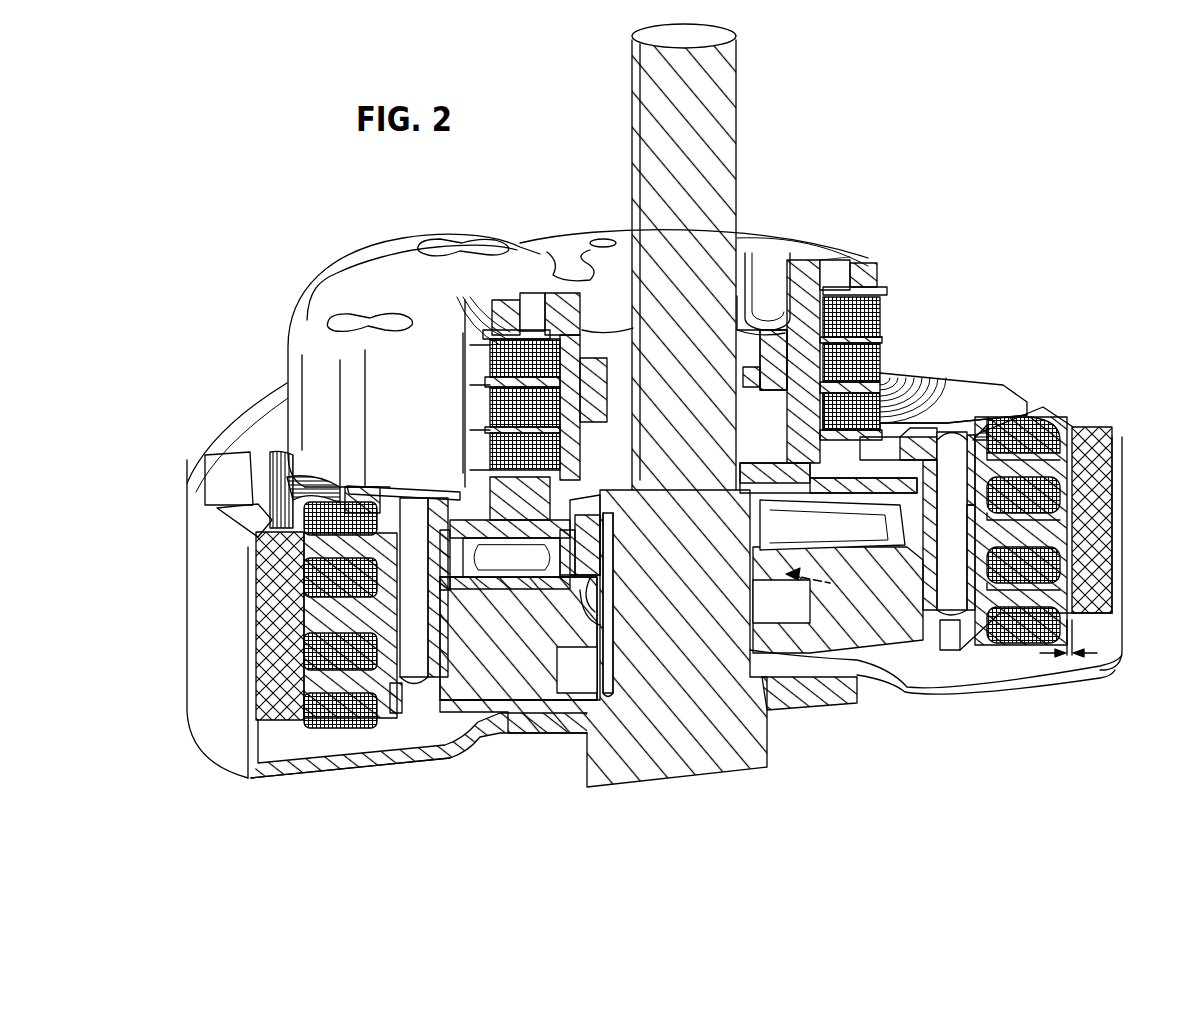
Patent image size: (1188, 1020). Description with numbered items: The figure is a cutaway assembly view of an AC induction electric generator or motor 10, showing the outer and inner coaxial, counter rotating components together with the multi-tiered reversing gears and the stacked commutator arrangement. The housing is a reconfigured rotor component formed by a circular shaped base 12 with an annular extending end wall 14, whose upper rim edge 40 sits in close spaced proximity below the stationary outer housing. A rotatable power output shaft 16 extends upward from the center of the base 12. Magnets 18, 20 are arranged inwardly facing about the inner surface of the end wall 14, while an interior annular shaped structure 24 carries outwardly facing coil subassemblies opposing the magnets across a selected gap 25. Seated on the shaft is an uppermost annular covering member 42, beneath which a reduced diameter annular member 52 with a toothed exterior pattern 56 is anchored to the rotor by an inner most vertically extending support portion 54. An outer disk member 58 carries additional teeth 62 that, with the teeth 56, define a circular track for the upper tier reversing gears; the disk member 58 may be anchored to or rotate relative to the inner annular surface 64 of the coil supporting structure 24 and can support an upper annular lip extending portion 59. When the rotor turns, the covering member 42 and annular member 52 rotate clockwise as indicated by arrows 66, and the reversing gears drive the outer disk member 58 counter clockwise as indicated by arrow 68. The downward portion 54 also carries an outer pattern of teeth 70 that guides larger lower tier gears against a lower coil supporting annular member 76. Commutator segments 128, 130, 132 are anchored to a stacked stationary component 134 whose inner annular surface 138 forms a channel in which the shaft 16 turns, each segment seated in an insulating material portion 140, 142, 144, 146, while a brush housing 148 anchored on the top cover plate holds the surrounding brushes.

The AC induction electric generator or motor 10 is at (912, 116).
The circular shaped base 12 is at (905, 690).
The annular extending end wall 14 is at (1120, 580).
The rotatable power output shaft 16 is at (740, 62).
The magnet 18 is at (1075, 415).
The magnet 20 is at (1010, 395).
The annular shaped structure 24 is at (962, 545).
The gap 25 is at (1045, 660).
The upper rim edge 40 is at (205, 486).
The uppermost annular covering member 42 is at (608, 492).
The reduced diameter annular member 52 is at (603, 545).
The inner most vertically extending support portion 54 is at (617, 585).
The toothed exterior pattern 56 is at (548, 575).
The outer disk member 58 is at (528, 565).
The upper annular lip extending portion 59 is at (463, 490).
The additional teeth 62 is at (490, 615).
The inner annular surface 64 is at (458, 578).
The arrows indicating clockwise direction 66 is at (745, 525).
The arrow indicating counter clockwise direction 68 is at (823, 590).
The outer pattern of teeth 70 is at (620, 612).
The lower coil supporting annular member 76 is at (465, 685).
The commutator segment 128 is at (883, 298).
The commutator segment 130 is at (882, 378).
The commutator segment 132 is at (945, 396).
The stacked structural stationary component 134 is at (782, 256).
The inner annular surface 138 is at (592, 280).
The insulating material portion 140 is at (899, 225).
The insulating material portion 142 is at (882, 340).
The insulating material portion 144 is at (897, 404).
The insulating material portion 146 is at (805, 400).
The brush housing 148 is at (290, 385).